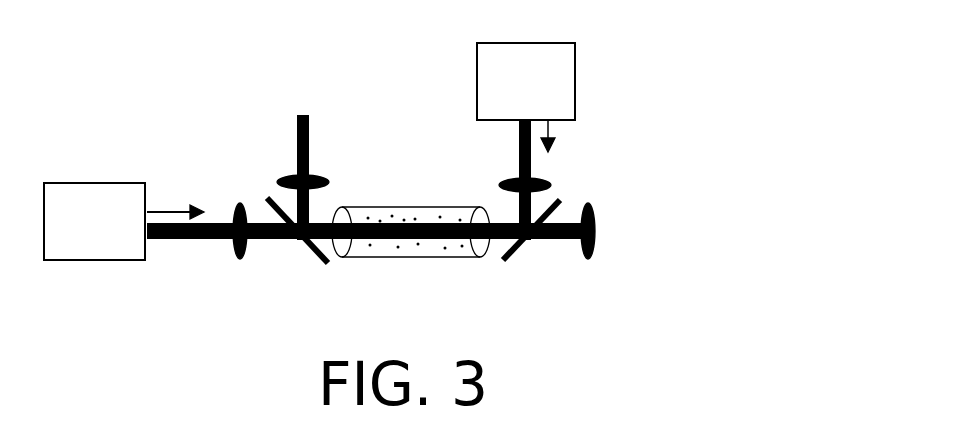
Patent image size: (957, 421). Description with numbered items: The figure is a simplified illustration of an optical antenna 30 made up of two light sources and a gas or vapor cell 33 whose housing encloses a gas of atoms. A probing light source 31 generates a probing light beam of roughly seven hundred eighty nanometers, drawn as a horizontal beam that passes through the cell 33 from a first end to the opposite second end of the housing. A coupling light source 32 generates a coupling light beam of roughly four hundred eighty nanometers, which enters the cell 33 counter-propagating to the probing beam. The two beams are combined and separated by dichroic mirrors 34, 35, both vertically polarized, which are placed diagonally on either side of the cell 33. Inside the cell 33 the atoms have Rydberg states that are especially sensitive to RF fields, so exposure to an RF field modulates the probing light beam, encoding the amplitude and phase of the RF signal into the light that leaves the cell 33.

The optical antenna 30 is at (239, 100).
The probing light source 31 is at (103, 236).
The coupling light source 32 is at (540, 91).
The gas or vapor cell 33 is at (417, 258).
The dichroic mirror 34 is at (300, 232).
The dichroic mirror 35 is at (530, 232).